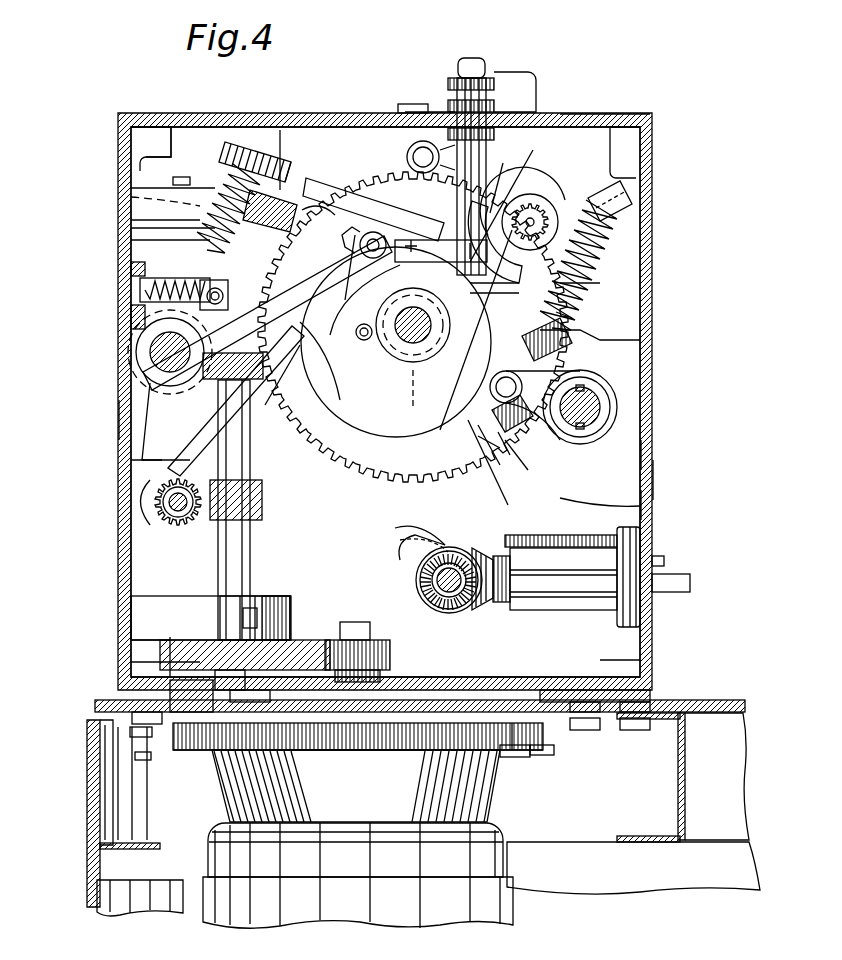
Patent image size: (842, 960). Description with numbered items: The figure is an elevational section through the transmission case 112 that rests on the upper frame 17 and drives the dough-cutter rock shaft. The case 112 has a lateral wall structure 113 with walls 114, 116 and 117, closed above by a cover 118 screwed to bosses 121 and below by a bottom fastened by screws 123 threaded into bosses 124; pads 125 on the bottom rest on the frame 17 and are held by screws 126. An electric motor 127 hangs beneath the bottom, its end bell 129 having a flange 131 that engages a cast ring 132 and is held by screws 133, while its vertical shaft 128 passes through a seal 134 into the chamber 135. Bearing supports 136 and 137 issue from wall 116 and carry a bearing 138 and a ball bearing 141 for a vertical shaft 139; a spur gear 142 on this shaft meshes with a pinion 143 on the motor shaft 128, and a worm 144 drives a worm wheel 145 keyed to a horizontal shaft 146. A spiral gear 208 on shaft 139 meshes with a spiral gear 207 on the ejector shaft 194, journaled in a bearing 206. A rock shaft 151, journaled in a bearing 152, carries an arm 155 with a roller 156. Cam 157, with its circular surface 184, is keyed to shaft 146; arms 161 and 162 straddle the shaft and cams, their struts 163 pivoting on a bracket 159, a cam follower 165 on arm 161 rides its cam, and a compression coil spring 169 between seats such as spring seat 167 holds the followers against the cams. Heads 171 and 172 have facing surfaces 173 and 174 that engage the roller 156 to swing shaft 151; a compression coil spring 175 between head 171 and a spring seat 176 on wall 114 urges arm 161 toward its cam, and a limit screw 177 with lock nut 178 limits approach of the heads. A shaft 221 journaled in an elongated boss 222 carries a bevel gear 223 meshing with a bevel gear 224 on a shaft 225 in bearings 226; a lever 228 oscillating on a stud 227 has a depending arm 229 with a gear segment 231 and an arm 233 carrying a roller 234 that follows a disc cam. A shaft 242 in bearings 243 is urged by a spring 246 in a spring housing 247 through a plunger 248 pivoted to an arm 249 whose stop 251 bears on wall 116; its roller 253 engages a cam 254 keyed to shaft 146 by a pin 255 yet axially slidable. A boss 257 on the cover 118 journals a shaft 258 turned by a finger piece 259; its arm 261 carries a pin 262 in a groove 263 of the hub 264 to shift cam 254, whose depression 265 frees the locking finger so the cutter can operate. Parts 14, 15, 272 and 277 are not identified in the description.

The bracket 14 is at (100, 885).
The support wall 15 is at (100, 790).
The upper frame 17 is at (100, 825).
The case 112 is at (653, 283).
The lateral wall structure 113 is at (654, 477).
The wall 114 is at (646, 503).
The wall 116 is at (130, 420).
The wall 117 is at (640, 506).
The cover 118 is at (622, 120).
The bosses 121 is at (145, 150).
The screws 123 is at (655, 697).
The bosses 124 is at (125, 668).
The pads 125 is at (130, 708).
The screws 126 is at (135, 740).
The electric motor 127 is at (352, 905).
The vertical shaft 128 is at (338, 752).
The end bell 129 is at (460, 806).
The flange 131 is at (545, 742).
The ring 132 is at (520, 732).
The screws 133 is at (130, 762).
The seal 134 is at (400, 705).
The chamber 135 is at (625, 455).
The bearing support 136 is at (160, 620).
The bearing support 137 is at (150, 210).
The bearing 138 is at (285, 598).
The vertically extending shaft 139 is at (232, 570).
The ball bearing 141 is at (150, 190).
The spur gear 142 is at (165, 655).
The pinion 143 is at (350, 650).
The worm 144 is at (220, 400).
The worm wheel 145 is at (300, 455).
The horizontally extending shaft 146 is at (408, 336).
The rock shaft 151 is at (598, 420).
The bearing 152 is at (618, 405).
The arm 155 is at (525, 374).
The roller 156 is at (612, 393).
The cam 157 is at (578, 285).
The bracket 159 is at (135, 247).
The arm 161 is at (298, 185).
The arm 162 is at (290, 420).
The struts 163 is at (347, 222).
The cam follower 165 is at (430, 178).
The spring seat 167 is at (235, 147).
The compression coil spring 169 is at (150, 232).
The head 171 is at (641, 340).
The head 172 is at (495, 452).
The facing surface 173 is at (520, 430).
The facing surface 174 is at (600, 353).
The compression coil spring 175 is at (612, 240).
The spring seat 176 is at (600, 203).
The limit screw 177 is at (520, 465).
The lock nut 178 is at (512, 445).
The circular cam surface 184 is at (584, 313).
The shaft 194 is at (162, 492).
The bearing 206 is at (165, 506).
The spiral gear 207 is at (170, 520).
The spiral gear 208 is at (262, 510).
The shaft 221 is at (675, 572).
The elongated boss 222 is at (573, 592).
The bevel gear 223 is at (492, 610).
The bevel gear 224 is at (417, 578).
The shaft 225 is at (425, 606).
The bearings 226 is at (430, 560).
The stud 227 is at (535, 218).
The lever 228 is at (525, 185).
The depending arm 229 is at (462, 500).
The gear segment 231 is at (400, 540).
The arm 233 is at (418, 128).
The roller 234 is at (409, 120).
The shaft 242 is at (150, 352).
The bearings 243 is at (145, 385).
The spring 246 is at (140, 292).
The spring housing 247 is at (140, 262).
The plunger 248 is at (178, 275).
The arm 249 is at (150, 330).
The stop 251 is at (135, 458).
The roller 253 is at (357, 235).
The cam 254 is at (345, 482).
The pin 255 is at (358, 338).
The boss 257 is at (474, 160).
The shaft 258 is at (430, 358).
The finger piece 259 is at (515, 92).
The arm 261 is at (395, 266).
The pin 262 is at (380, 295).
The groove 263 is at (465, 395).
The hub 264 is at (372, 375).
The depression 265 is at (478, 440).
The lever 272 is at (300, 278).
The arm 277 is at (315, 200).